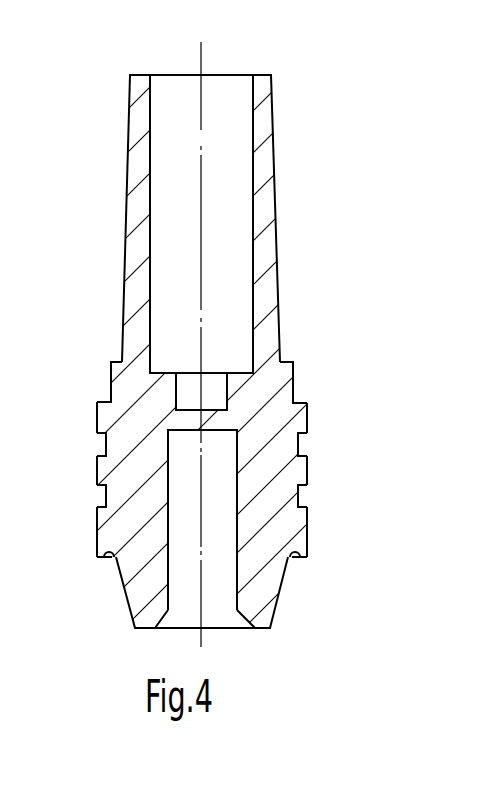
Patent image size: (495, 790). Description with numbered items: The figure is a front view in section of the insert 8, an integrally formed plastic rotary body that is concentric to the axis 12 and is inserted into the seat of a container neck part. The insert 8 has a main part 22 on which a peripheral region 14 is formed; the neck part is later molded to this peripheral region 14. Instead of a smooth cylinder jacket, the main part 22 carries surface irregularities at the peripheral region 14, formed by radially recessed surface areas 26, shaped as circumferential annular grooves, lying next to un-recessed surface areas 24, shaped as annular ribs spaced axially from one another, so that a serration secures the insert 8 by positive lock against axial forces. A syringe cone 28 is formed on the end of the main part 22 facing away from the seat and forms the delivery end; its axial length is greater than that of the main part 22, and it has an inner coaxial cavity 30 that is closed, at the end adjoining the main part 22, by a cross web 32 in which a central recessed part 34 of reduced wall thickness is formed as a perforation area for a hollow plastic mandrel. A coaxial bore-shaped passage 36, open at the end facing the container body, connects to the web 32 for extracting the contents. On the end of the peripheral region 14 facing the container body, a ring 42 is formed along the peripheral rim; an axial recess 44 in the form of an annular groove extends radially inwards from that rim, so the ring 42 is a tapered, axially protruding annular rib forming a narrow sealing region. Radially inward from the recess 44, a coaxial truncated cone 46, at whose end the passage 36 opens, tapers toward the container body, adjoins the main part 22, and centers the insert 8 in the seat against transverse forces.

The insert 8 is at (230, 395).
The axis 12 is at (203, 48).
The peripheral region 14 is at (230, 475).
The main part 22 is at (148, 458).
The un-recessed surface areas 24 is at (98, 537).
The radially recessed surface areas 26 is at (295, 385).
The syringe cone 28 is at (142, 248).
The cavity 30 is at (182, 198).
The cross web 32 is at (187, 423).
The recessed part 34 is at (190, 410).
The passage 36 is at (237, 515).
The ring 42 is at (309, 548).
The axial recess 44 is at (115, 555).
The truncated cone 46 is at (133, 618).